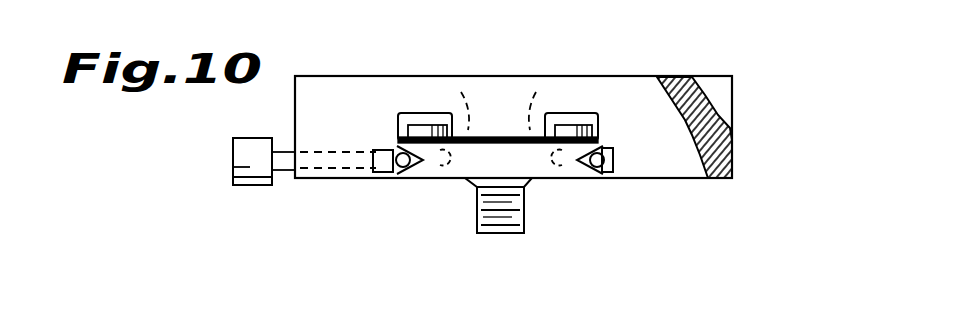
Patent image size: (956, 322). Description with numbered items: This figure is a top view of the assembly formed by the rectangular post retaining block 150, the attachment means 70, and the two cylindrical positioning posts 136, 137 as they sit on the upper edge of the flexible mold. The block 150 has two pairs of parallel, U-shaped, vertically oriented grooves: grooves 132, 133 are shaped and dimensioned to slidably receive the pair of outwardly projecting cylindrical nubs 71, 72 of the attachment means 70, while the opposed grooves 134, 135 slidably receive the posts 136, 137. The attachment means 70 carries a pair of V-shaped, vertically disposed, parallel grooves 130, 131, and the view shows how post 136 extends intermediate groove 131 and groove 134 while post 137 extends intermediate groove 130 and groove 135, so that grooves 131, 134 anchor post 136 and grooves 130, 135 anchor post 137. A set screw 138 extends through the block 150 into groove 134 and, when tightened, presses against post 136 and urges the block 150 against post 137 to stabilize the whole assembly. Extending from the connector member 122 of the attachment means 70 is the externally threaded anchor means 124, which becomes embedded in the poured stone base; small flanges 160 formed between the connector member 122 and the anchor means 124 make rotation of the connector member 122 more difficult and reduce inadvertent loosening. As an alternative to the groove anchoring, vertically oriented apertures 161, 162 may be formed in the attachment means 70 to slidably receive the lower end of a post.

The block 150 is at (750, 106).
The set screw 138 is at (233, 152).
The U-shaped vertically oriented groove 134 is at (388, 150).
The V-shaped vertically disposed groove 131 is at (413, 180).
The cylindrical positioning post 136 is at (412, 183).
The U-shaped vertically oriented groove 135 is at (613, 162).
The V-shaped vertically disposed groove 130 is at (577, 177).
The cylindrical positioning post 137 is at (585, 182).
The attachment means 70 is at (481, 150).
The U-shaped vertically oriented groove 132 is at (414, 112).
The outwardly projecting cylindrical nub 71 is at (400, 127).
The vertically oriented aperture 161 is at (442, 106).
The U-shaped vertically oriented groove 133 is at (590, 112).
The outwardly projecting cylindrical nub 72 is at (592, 137).
The vertically oriented aperture 162 is at (557, 106).
The connector member 122 is at (532, 175).
The flange 160 is at (470, 183).
The anchor means 124 is at (490, 233).